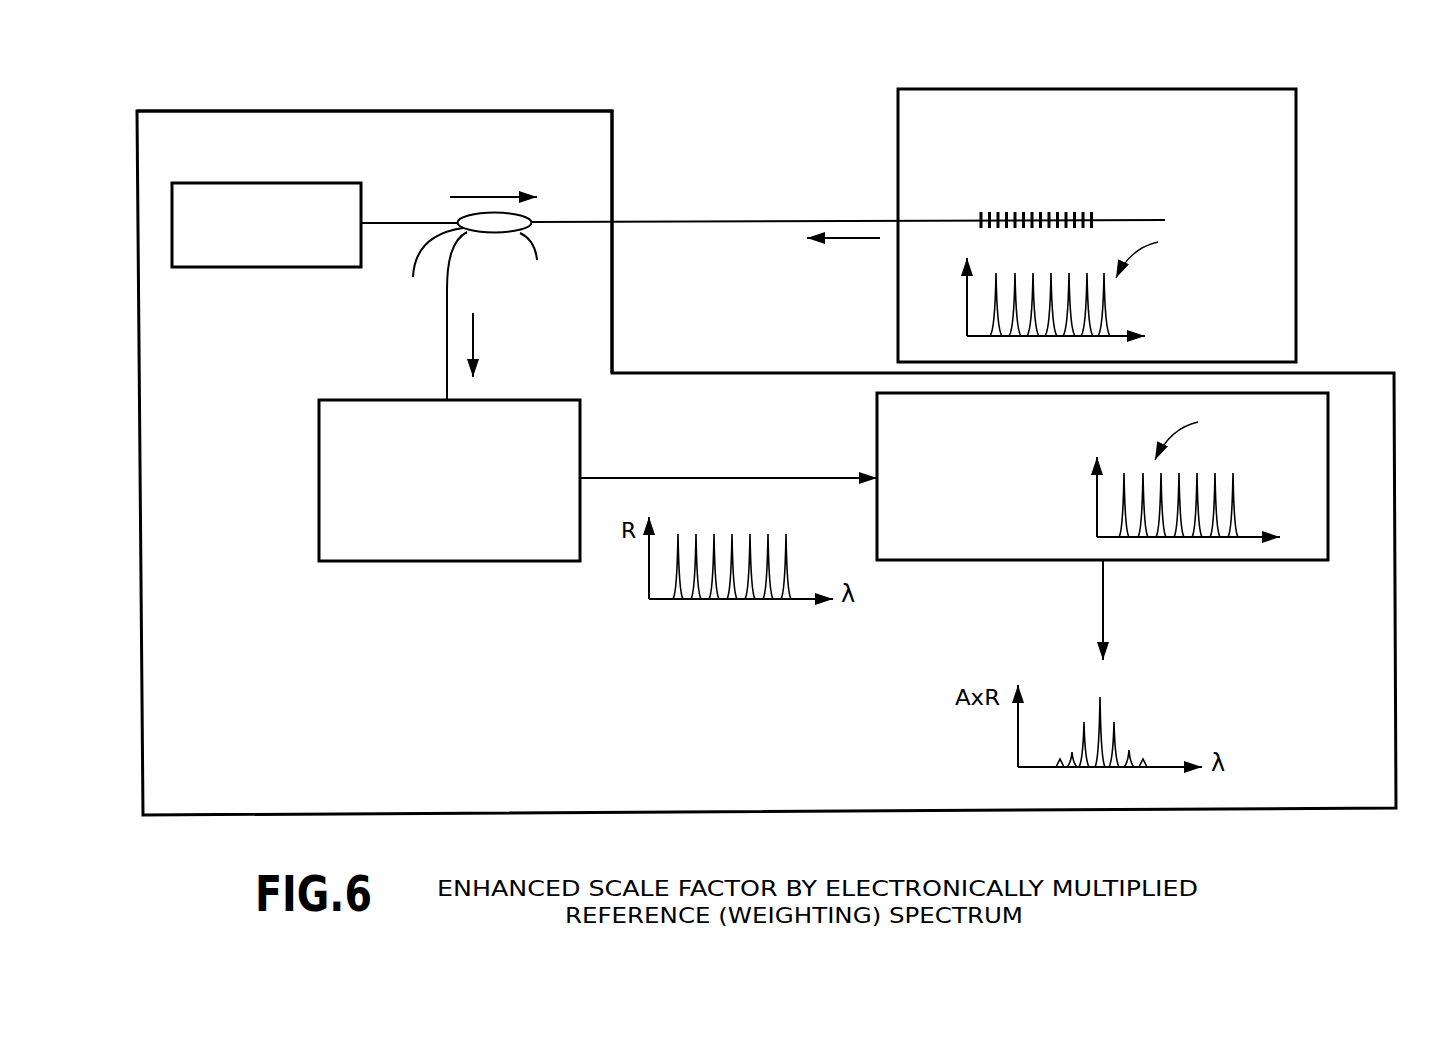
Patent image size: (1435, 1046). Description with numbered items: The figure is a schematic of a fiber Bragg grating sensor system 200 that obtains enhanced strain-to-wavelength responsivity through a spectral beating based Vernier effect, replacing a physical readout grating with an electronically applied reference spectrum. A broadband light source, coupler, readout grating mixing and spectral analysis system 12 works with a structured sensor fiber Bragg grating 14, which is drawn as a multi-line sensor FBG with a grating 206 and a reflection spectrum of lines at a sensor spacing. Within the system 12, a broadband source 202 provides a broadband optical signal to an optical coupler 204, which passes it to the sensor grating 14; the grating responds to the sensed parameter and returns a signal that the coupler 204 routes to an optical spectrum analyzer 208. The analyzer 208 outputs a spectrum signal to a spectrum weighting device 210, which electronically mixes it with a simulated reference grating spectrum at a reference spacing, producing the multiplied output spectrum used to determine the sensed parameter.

The fiber Bragg grating sensor system 200 is at (407, 75).
The broadband light source, coupler, readout grating mixing and spectral analysis sy 12 is at (505, 111).
The structured sensor fiber Bragg grating 14 is at (1240, 89).
The broadband source 202 is at (232, 267).
The optical coupler 204 is at (455, 307).
The sensor grating 206 is at (1043, 205).
The optical spectrum analyzer 208 is at (389, 561).
The spectrum weighting device 210 is at (1228, 560).